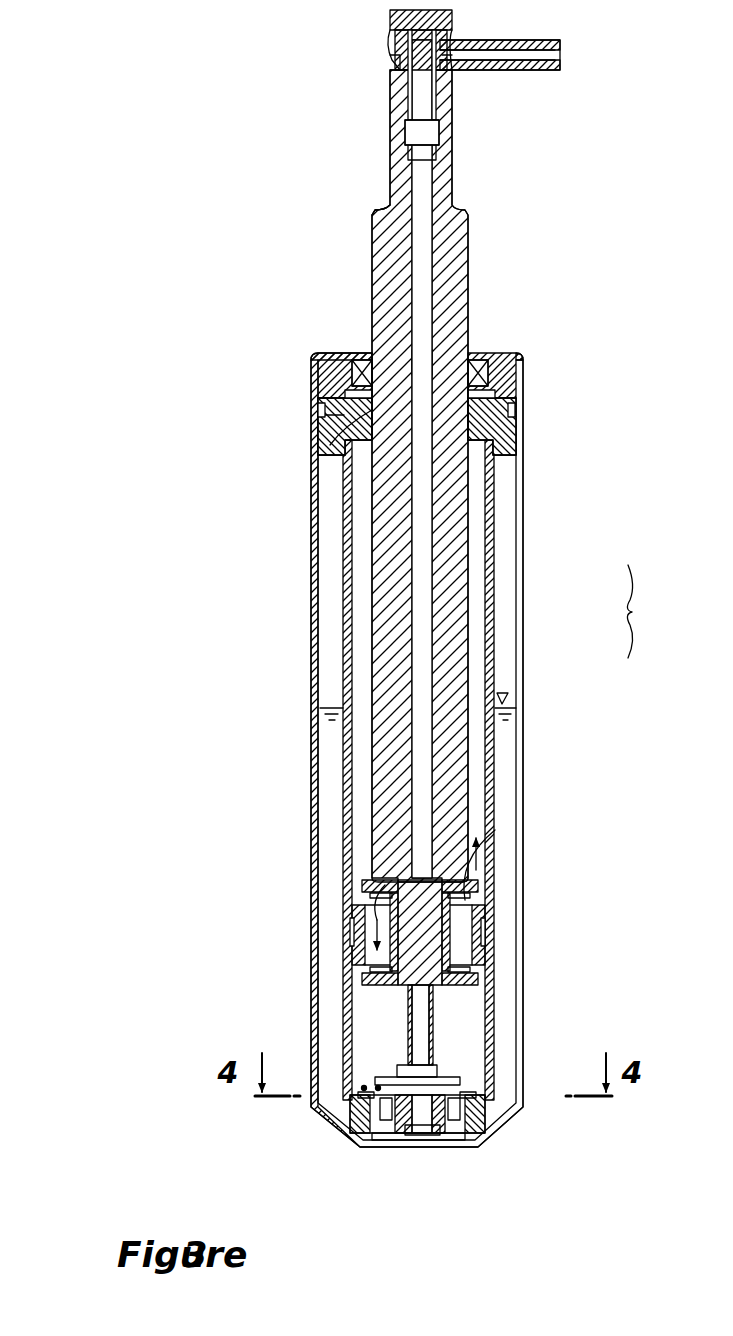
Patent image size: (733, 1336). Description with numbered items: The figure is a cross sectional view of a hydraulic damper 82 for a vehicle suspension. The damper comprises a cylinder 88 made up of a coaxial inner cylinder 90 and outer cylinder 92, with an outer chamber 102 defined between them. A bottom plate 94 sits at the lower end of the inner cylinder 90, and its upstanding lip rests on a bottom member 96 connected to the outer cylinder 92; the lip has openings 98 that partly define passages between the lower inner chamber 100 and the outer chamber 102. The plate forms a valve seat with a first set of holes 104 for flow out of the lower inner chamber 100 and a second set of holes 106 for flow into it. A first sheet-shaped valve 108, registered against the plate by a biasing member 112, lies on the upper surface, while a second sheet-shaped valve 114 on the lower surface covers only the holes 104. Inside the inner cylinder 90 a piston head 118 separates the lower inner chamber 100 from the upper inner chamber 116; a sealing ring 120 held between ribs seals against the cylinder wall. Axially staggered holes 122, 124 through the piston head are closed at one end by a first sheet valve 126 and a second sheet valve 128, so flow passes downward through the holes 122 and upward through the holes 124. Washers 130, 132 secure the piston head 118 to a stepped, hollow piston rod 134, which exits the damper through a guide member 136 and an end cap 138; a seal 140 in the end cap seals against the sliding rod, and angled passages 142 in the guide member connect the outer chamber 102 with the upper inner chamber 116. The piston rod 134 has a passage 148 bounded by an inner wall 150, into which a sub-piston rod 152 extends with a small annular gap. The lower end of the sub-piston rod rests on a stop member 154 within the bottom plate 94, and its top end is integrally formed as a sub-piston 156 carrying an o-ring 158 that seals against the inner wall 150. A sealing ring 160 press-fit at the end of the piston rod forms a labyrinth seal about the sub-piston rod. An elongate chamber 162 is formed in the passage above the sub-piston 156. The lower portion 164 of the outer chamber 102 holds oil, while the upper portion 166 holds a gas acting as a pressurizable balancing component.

The hydraulic damper 82 is at (252, 314).
The cylinder 88 is at (651, 611).
The inner cylinder 90 is at (494, 587).
The outer cylinder 92 is at (523, 647).
The bottom plate 94 is at (352, 1174).
The end cap 96 is at (312, 1118).
The openings 98 is at (345, 1147).
The lower inner chamber 100 is at (490, 1022).
The outer chamber 102 is at (510, 785).
The first set of holes 104 is at (370, 1133).
The second set of holes 106 is at (315, 1105).
The first sheet-shaped valve 108 is at (490, 1055).
The biasing member 112 is at (378, 1085).
The second sheet-shaped valve 114 is at (388, 1145).
The upper inner chamber 116 is at (485, 495).
The piston head 118 is at (423, 938).
The sealing ring 120 is at (485, 932).
The first set of holes 122 is at (352, 942).
The second set of holes 124 is at (478, 905).
The first sheet valve 126 is at (478, 972).
The second sheet valve 128 is at (362, 888).
The washer 130 is at (480, 820).
The washer 132 is at (365, 985).
The piston rod 134 is at (380, 285).
The guide member 136 is at (516, 432).
The end cap 138 is at (523, 375).
The seal 140 is at (480, 362).
The passages 142 is at (337, 418).
The passage 148 is at (432, 262).
The inner wall 150 is at (432, 185).
The sub-piston rod 152 is at (415, 1018).
The stop member 154 is at (421, 1140).
The sub-piston 156 is at (412, 355).
The o-ring 158 is at (345, 430).
The sealing ring 160 is at (468, 1090).
The elongate chamber 162 is at (378, 212).
The lower portion 164 is at (333, 812).
The upper portion 166 is at (330, 625).